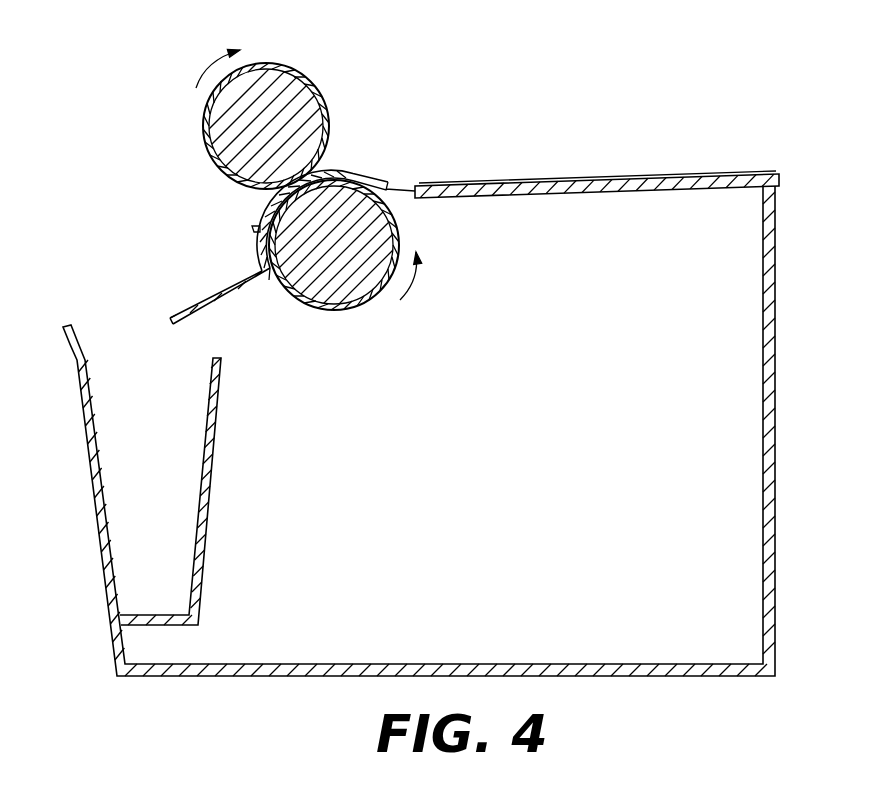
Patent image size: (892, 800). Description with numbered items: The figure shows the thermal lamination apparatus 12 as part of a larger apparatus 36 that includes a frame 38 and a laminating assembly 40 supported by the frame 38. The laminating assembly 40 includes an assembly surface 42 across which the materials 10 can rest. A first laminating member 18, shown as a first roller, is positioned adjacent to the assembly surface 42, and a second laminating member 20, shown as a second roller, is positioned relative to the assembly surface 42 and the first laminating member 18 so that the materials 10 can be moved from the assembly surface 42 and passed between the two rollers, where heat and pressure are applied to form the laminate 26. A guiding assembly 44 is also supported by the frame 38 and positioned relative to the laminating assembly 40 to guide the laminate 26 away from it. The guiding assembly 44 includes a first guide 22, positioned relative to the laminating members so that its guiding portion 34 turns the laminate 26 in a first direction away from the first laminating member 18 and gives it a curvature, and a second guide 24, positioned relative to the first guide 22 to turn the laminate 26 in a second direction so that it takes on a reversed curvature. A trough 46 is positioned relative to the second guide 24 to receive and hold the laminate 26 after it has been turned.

The materials 10 is at (637, 172).
The thermal lamination apparatus 12 is at (338, 125).
The first laminating member 18 is at (283, 66).
The second laminating member 20 is at (357, 310).
The first guide 22 is at (262, 203).
The second guide 24 is at (236, 290).
The laminate 26 is at (176, 316).
The guiding portion 34 is at (256, 220).
The larger apparatus 36 is at (192, 110).
The frame 38 is at (776, 437).
The laminating assembly 40 is at (418, 162).
The assembly surface 42 is at (557, 197).
The guiding assembly 44 is at (181, 252).
The trough 46 is at (130, 576).